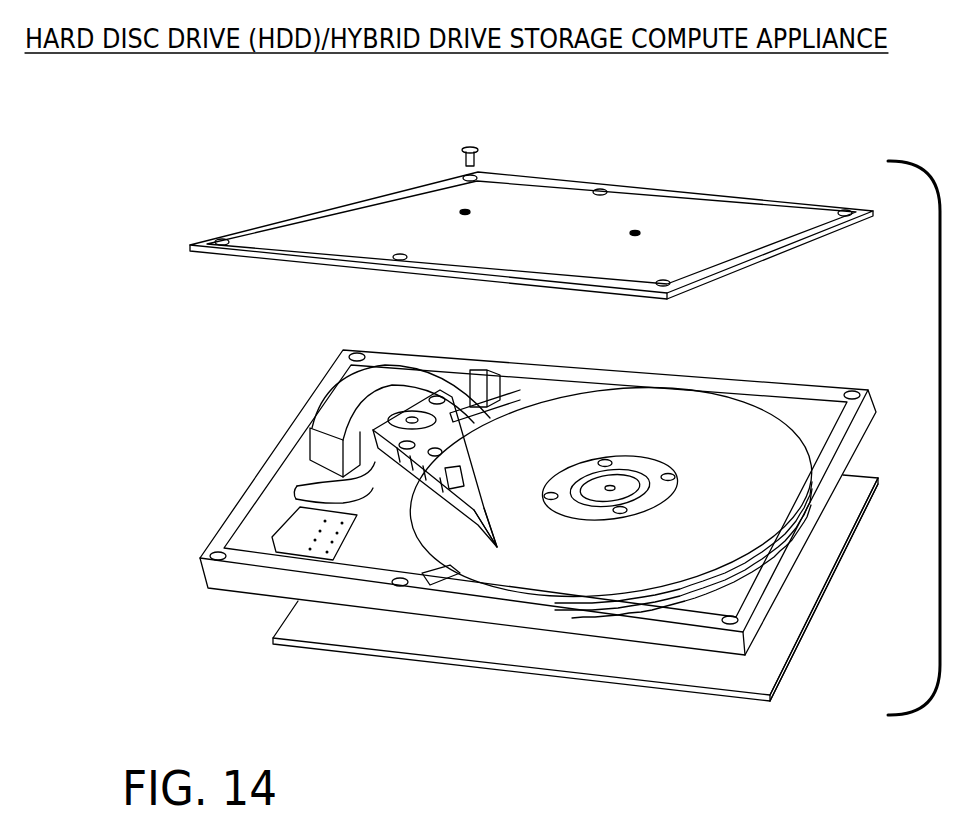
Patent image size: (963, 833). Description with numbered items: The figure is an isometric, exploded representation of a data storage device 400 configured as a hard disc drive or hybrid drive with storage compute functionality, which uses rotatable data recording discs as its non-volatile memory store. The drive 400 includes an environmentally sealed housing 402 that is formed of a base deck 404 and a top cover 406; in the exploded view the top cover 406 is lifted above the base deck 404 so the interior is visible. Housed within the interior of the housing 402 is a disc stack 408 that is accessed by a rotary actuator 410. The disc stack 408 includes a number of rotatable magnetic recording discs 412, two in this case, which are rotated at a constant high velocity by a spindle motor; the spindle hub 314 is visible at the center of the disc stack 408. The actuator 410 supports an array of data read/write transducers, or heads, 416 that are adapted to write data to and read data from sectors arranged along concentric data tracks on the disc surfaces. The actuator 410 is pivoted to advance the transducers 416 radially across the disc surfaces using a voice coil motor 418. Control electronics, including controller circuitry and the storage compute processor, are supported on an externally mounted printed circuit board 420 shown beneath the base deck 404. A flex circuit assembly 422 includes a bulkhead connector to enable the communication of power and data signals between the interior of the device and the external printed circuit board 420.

The data storage device 400 is at (170, 130).
The housing 402 is at (246, 357).
The base deck 404 is at (800, 545).
The top cover 406 is at (634, 208).
The disc stack 408 is at (708, 400).
The rotary actuator 410 is at (478, 492).
The magnetic recording discs 412 is at (678, 620).
The data read/write transducers 416 is at (498, 545).
The voice coil motor 418 is at (410, 370).
The printed circuit board 420 is at (326, 650).
The flex circuit assembly 422 is at (315, 490).
The spindle hub 314 is at (618, 480).